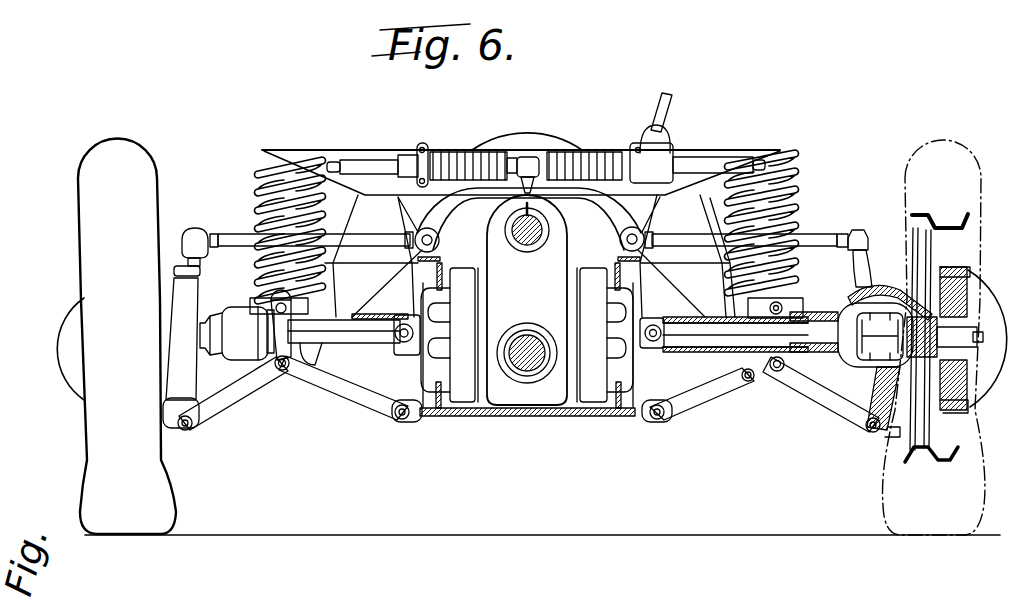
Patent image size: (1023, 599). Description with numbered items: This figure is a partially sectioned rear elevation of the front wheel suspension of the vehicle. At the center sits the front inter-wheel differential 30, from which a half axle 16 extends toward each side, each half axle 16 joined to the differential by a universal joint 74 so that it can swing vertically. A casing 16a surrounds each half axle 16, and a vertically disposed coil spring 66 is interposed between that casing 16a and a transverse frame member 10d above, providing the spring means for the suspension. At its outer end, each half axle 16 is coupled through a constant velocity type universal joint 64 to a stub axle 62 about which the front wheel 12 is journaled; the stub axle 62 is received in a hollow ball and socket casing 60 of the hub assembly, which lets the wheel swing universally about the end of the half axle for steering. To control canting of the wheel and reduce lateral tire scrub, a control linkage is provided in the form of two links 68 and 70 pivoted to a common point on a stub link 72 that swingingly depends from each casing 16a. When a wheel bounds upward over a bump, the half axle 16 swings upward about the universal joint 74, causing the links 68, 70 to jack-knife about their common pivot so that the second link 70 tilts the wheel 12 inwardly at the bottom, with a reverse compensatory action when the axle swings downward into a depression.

The front wheel 12 is at (83, 198).
The transverse frame member 10d is at (805, 137).
The coil spring 66 is at (263, 183).
The ball and socket casing 60 is at (203, 309).
The stub axle 62 is at (920, 297).
The constant velocity universal joint 64 is at (878, 357).
The half axle 16 is at (372, 332).
The casing 16a is at (355, 316).
The universal joint 74 is at (399, 360).
The control link 68 is at (373, 404).
The control link 70 is at (223, 405).
The stub link 72 is at (282, 372).
The front inter-wheel differential 30 is at (547, 412).